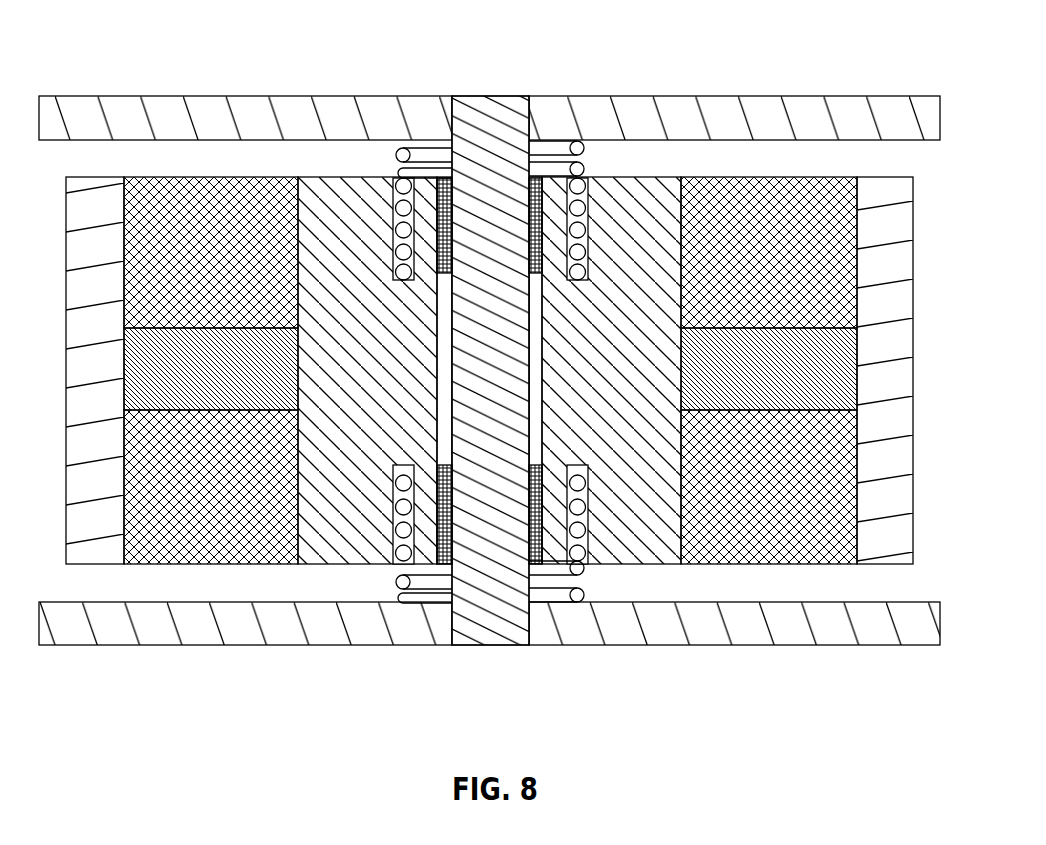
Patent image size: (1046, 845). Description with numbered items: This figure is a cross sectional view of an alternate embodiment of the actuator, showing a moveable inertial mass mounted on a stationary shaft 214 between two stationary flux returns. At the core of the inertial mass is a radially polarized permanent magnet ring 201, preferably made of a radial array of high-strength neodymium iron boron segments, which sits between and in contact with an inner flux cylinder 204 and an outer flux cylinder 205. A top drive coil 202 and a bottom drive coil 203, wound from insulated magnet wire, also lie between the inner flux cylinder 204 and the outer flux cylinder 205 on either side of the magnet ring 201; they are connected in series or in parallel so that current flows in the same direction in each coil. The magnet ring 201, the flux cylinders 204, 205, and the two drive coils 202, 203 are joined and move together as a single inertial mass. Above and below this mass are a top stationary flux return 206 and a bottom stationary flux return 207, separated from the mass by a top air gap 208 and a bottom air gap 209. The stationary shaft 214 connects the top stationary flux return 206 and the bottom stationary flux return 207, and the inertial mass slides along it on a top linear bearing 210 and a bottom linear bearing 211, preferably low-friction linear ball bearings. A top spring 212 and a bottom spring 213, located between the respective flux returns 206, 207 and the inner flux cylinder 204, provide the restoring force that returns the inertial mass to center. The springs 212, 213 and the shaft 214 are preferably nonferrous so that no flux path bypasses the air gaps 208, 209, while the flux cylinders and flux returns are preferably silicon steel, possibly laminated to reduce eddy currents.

The radially polarized permanent magnet ring 201 is at (243, 388).
The top drive coil 202 is at (226, 208).
The bottom drive coil 203 is at (155, 497).
The inner flux cylinder 204 is at (363, 210).
The outer flux cylinder 205 is at (77, 192).
The top stationary flux return 206 is at (205, 117).
The bottom stationary flux return 207 is at (108, 617).
The top air gap 208 is at (745, 148).
The bottom air gap 209 is at (745, 595).
The top linear bearing 210 is at (537, 190).
The bottom linear bearing 211 is at (540, 570).
The top spring 212 is at (418, 153).
The bottom spring 213 is at (438, 578).
The stationary shaft 214 is at (512, 617).